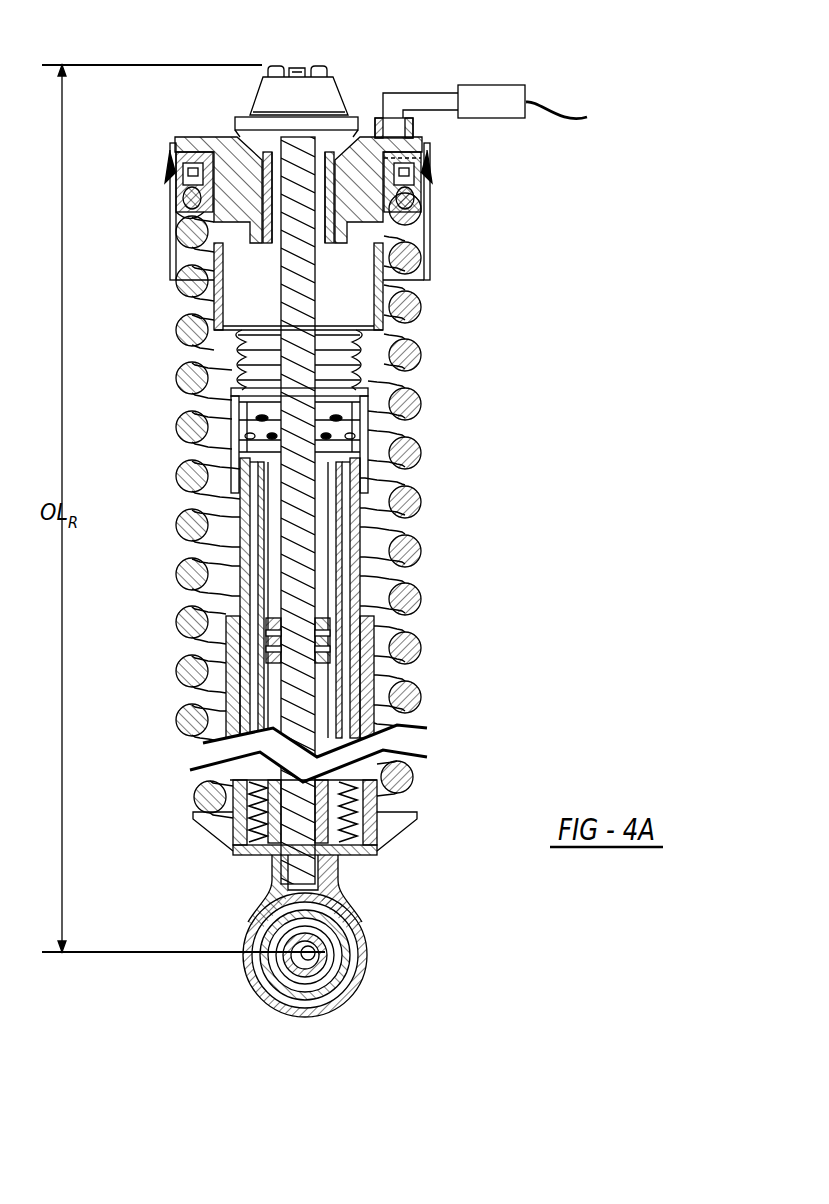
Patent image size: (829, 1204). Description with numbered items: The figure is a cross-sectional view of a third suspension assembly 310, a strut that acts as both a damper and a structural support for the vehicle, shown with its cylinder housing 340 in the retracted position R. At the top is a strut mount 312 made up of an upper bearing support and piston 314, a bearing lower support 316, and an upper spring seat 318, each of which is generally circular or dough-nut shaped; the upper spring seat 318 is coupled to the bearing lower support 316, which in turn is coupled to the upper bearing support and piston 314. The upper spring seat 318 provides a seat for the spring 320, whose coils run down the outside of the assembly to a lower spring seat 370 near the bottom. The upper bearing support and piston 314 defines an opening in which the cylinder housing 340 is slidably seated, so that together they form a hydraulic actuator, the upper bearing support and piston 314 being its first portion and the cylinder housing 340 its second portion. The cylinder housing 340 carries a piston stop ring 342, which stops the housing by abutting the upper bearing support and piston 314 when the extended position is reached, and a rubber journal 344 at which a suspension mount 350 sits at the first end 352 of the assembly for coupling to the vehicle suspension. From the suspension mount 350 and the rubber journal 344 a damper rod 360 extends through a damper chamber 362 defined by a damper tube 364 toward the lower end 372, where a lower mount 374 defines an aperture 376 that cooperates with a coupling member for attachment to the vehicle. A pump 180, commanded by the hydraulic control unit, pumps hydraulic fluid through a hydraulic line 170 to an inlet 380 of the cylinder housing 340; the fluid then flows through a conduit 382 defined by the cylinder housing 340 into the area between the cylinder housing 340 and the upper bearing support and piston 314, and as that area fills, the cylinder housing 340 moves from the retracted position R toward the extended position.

The third suspension assembly 310 is at (630, 129).
The strut mount 312 is at (145, 208).
The upper bearing support and piston 314 is at (427, 158).
The bearing lower support 316 is at (422, 183).
The upper spring seat 318 is at (423, 193).
The spring 320 is at (410, 505).
The cylinder housing 340 is at (183, 150).
The piston stop ring 342 is at (213, 323).
The rubber journal 344 is at (233, 140).
The suspension mount 350 is at (262, 113).
The first end 352 is at (320, 68).
The damper rod 360 is at (302, 537).
The damper chamber 362 is at (330, 572).
The damper tube 364 is at (337, 603).
The lower spring seat 370 is at (400, 823).
The lower end 372 is at (333, 1003).
The lower mount 374 is at (367, 957).
The aperture 376 is at (315, 952).
The inlet 380 is at (383, 137).
The conduit 382 is at (423, 140).
The hydraulic line 170 is at (452, 88).
The pump 180 is at (571, 105).
The retracted position R is at (233, 177).